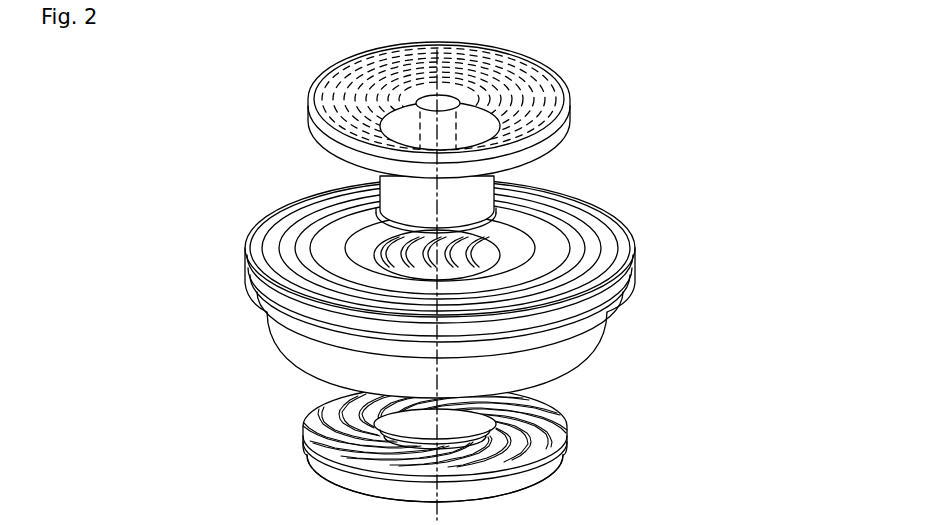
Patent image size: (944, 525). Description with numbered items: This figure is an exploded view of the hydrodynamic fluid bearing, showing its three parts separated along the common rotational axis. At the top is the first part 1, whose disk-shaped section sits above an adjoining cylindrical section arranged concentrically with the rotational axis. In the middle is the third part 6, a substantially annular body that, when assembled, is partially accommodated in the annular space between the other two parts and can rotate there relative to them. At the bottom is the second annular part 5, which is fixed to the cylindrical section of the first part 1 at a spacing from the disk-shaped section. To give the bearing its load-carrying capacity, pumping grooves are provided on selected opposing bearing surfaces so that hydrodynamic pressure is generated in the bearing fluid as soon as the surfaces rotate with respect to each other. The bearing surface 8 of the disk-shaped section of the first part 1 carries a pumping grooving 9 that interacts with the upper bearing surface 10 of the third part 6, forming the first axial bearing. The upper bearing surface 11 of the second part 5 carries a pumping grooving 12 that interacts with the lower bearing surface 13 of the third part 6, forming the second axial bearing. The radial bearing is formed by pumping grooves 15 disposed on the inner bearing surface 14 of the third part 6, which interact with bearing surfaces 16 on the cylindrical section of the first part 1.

The first part 1 is at (554, 113).
The second annular part 5 is at (566, 468).
The third part 6 is at (480, 257).
The bearing surface 8 is at (525, 181).
The pumping grooving 9 is at (522, 168).
The upper bearing surface 10 is at (525, 258).
The upper bearing surface 11 is at (558, 447).
The pumping grooving 12 is at (560, 448).
The lower bearing surface 13 is at (582, 379).
The inner bearing surface 14 is at (380, 250).
The pumping grooves 15 is at (377, 222).
The bearing surfaces 16 is at (385, 198).